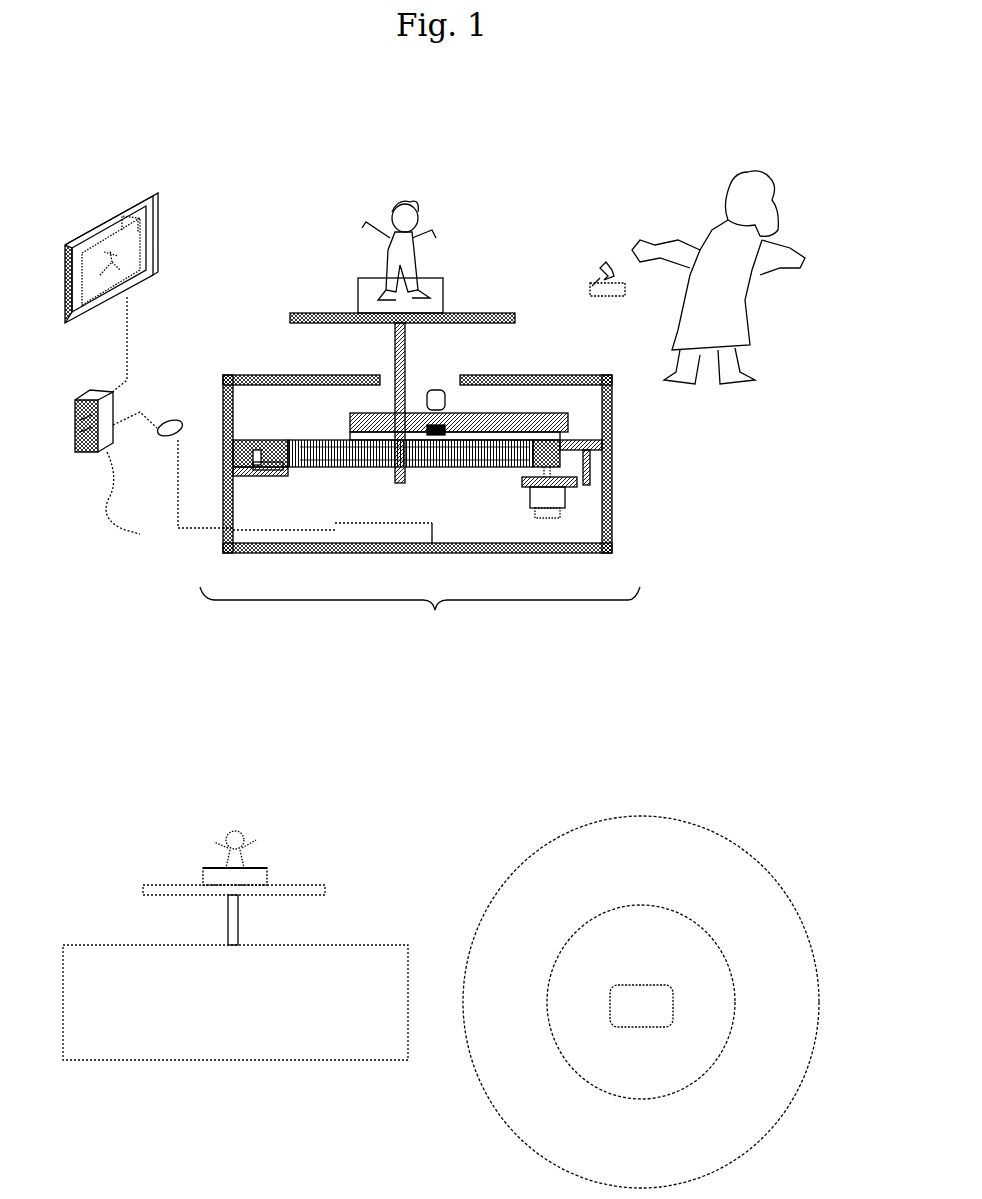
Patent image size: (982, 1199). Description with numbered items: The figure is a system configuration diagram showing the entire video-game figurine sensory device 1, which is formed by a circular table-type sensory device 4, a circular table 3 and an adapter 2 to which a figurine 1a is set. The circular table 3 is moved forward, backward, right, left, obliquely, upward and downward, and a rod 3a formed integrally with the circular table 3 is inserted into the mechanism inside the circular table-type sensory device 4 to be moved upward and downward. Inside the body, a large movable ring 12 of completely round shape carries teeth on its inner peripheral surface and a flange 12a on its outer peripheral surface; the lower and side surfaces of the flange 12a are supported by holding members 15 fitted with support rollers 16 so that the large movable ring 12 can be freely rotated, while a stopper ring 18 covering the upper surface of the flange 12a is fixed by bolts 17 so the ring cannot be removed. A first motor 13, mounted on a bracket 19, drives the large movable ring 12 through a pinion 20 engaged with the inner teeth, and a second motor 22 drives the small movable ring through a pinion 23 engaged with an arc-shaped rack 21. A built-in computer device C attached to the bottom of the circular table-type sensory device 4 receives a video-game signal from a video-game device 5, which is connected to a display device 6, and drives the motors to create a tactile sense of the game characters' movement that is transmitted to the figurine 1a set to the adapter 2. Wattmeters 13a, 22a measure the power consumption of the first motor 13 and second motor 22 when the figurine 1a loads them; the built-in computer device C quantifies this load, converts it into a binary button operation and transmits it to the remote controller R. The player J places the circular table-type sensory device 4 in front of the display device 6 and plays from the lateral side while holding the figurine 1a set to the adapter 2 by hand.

The video-game figurine sensory device 1 is at (420, 614).
The figurine 1a is at (383, 235).
The adapter 2 is at (368, 300).
The circular table 3 is at (478, 312).
The rod 3a is at (394, 354).
The circular table-type sensory device 4 is at (267, 300).
The video-game device 5 is at (117, 470).
The display device 6 is at (155, 200).
The large movable ring 12 is at (300, 438).
The flange 12a is at (576, 440).
The first motor 13 is at (530, 495).
The wattmeter 13a is at (548, 525).
The holding member 15 is at (248, 478).
The support roller 16 is at (226, 464).
The bolt 17 is at (247, 440).
The stopper ring 18 is at (258, 447).
The bracket 19 is at (574, 490).
The pinion 20 is at (514, 455).
The rack 21 is at (518, 418).
The second motor 22 is at (447, 402).
The wattmeter 22a is at (430, 388).
The pinion 23 is at (465, 472).
The built-in computer device C is at (372, 535).
The remote controller R is at (162, 445).
The player J is at (735, 325).